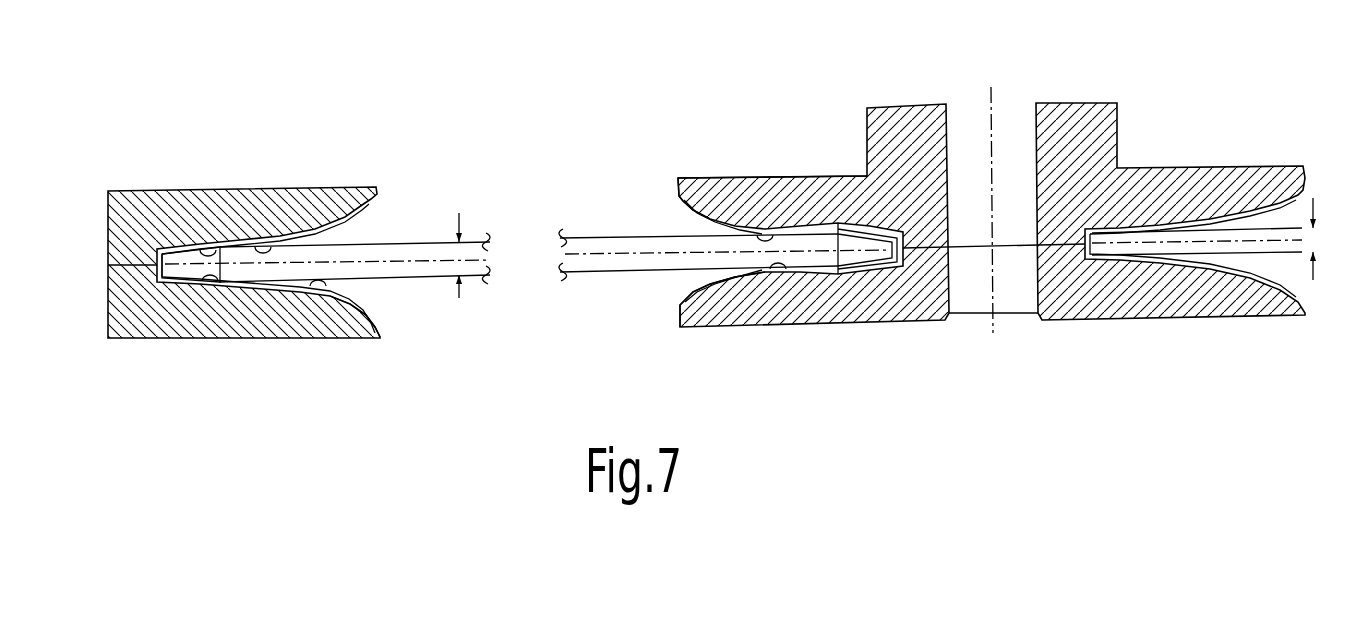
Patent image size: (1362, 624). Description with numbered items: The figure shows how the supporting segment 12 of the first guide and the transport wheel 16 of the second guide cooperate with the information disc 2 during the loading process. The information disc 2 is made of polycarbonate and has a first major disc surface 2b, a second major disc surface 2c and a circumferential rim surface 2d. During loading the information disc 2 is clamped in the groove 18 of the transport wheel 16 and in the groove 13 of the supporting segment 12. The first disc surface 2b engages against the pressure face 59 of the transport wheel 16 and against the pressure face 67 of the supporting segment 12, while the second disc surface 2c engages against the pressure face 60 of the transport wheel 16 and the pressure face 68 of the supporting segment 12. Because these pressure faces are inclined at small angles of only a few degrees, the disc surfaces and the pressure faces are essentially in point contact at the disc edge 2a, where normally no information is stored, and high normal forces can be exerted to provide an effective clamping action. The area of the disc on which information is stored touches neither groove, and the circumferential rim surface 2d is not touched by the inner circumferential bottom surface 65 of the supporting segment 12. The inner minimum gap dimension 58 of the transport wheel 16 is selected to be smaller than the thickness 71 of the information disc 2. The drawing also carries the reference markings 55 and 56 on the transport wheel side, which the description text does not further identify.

The information disc 2 is at (603, 253).
The disc edge 2a is at (220, 273).
The first major disc surface 2b is at (383, 243).
The second major disc surface 2c is at (401, 279).
The circumferential rim surface 2d is at (200, 246).
The supporting segment 12 is at (94, 172).
The groove 13 is at (378, 297).
The transport wheel 16 is at (991, 175).
The groove 18 is at (677, 287).
The flange 55 is at (722, 178).
The sleeve edge 56 is at (683, 202).
The inner minimum gap dimension 58 is at (1332, 247).
The pressure face 59 is at (761, 231).
The pressure face 60 is at (772, 273).
The inner circumferential bottom surface 65 is at (245, 290).
The pressure face 67 is at (258, 241).
The pressure face 68 is at (318, 287).
The thickness 71 is at (461, 298).